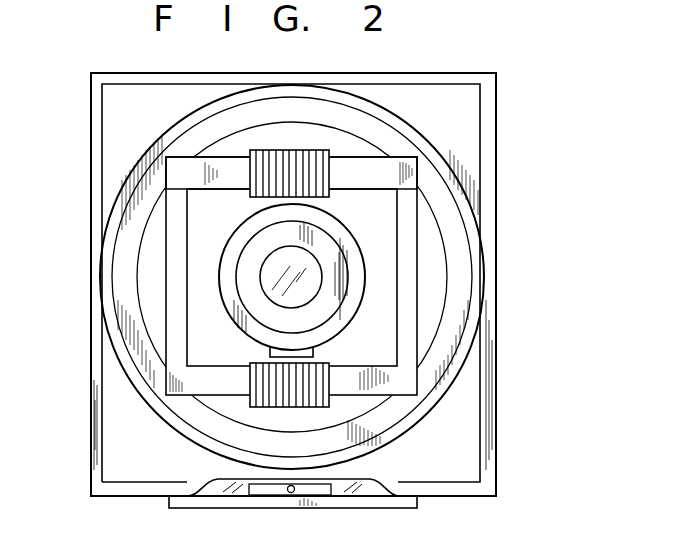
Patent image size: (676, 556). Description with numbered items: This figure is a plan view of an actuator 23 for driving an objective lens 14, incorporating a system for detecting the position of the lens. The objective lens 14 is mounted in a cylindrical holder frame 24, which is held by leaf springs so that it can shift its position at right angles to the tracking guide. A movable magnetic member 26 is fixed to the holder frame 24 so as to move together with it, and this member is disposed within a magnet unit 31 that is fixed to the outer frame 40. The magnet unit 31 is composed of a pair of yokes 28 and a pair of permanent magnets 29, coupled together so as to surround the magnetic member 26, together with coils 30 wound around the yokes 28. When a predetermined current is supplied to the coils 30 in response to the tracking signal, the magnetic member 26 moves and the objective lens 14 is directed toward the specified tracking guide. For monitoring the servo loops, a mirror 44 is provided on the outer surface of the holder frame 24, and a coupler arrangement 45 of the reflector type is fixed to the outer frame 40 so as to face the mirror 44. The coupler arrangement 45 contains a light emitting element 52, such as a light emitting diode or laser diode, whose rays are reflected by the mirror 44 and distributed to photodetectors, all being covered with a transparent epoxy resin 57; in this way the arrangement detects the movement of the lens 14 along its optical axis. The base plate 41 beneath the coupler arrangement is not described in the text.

The objective lens 14 is at (310, 266).
The actuator 23 is at (504, 166).
The cylindrical holder frame 24 is at (325, 305).
The movable magnetic member 26 is at (224, 278).
The yokes 28 is at (392, 167).
The permanent magnets 29 is at (176, 264).
The coils 30 is at (290, 150).
The magnet unit 31 is at (184, 170).
The outer frame 40 is at (490, 111).
The base plate 41 is at (401, 500).
The mirror 44 is at (270, 352).
The coupler arrangement 45 is at (388, 467).
The light emitting element 52 is at (291, 493).
The transparent epoxy resin 57 is at (219, 484).